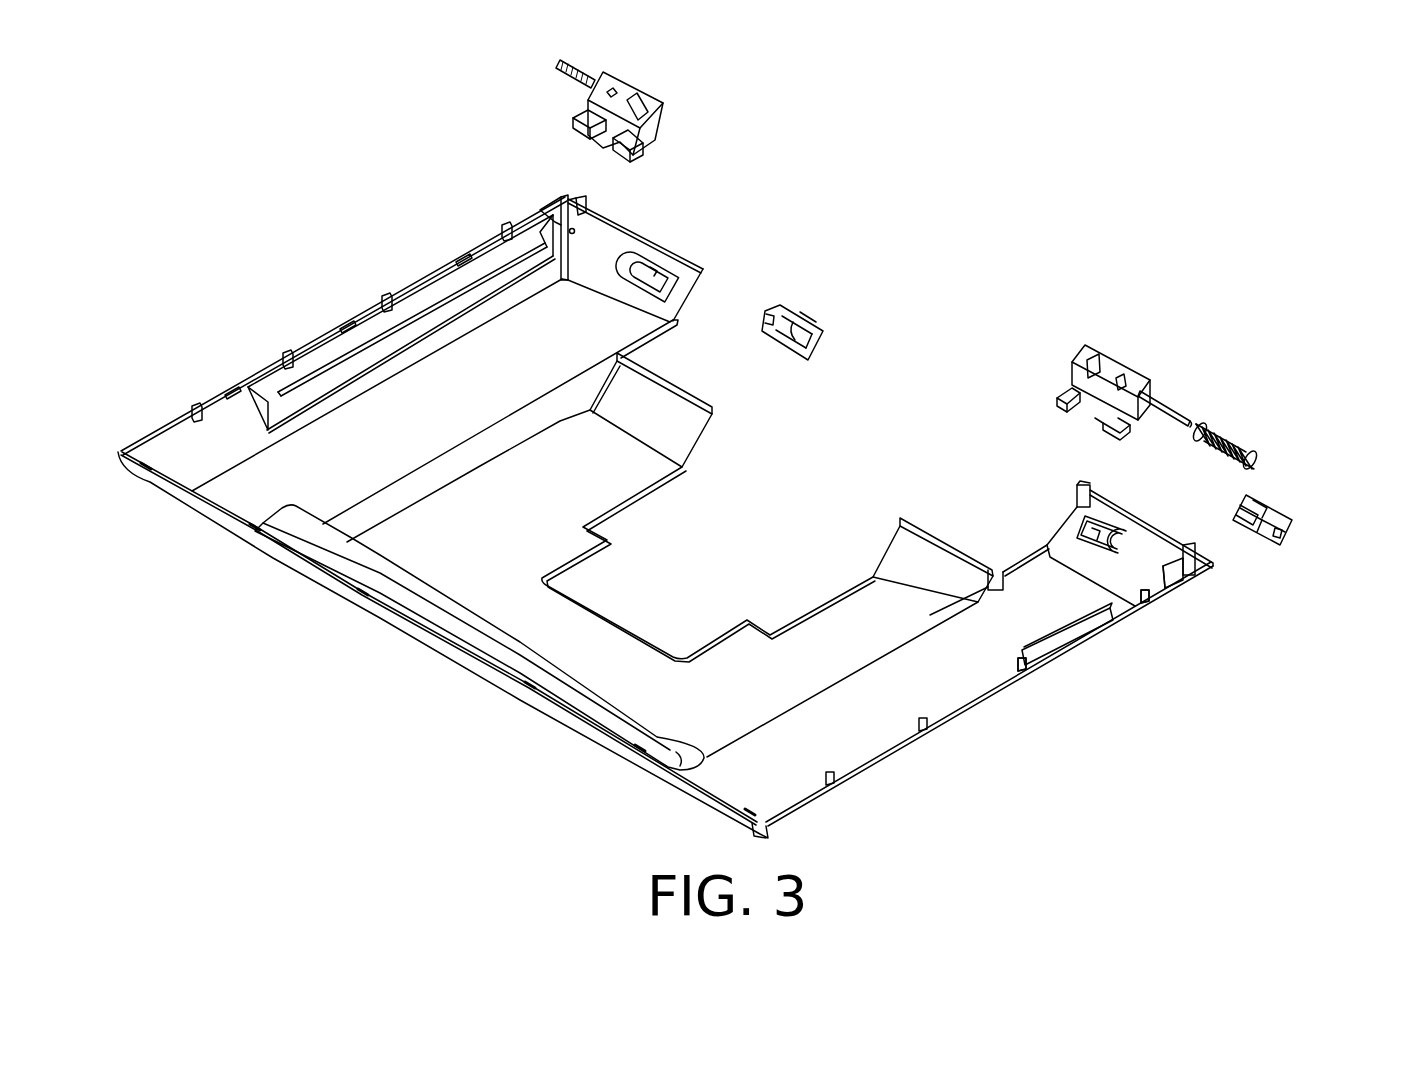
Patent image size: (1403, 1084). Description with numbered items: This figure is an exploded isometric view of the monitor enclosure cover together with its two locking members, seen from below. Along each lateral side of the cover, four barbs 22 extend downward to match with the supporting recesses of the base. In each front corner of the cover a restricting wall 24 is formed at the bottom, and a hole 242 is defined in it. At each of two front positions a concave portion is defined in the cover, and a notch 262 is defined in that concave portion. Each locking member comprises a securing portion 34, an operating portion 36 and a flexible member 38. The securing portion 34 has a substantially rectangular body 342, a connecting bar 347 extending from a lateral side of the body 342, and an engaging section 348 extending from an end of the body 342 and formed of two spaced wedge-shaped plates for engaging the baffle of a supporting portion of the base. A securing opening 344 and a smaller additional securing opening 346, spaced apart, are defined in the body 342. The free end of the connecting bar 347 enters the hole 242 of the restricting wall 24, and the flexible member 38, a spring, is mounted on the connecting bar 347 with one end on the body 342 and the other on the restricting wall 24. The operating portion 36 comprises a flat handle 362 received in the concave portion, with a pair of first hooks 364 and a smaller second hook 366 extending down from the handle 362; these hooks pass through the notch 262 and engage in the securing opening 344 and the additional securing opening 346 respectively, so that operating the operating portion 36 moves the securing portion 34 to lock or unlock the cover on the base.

The barbs 22 is at (387, 296).
The restricting wall 24 is at (566, 195).
The hole 242 is at (575, 231).
The notch 262 is at (645, 262).
The securing portion 34 is at (1105, 339).
The body 342 is at (1113, 370).
The securing opening 344 is at (1082, 358).
The additional securing opening 346 is at (1121, 380).
The connecting bar 347 is at (1167, 400).
The engaging section 348 is at (1072, 403).
The flexible member 38 is at (1222, 430).
The operating portion 36 is at (1303, 521).
The handle 362 is at (1273, 510).
The first hooks 364 is at (1257, 497).
The second hook 366 is at (1288, 558).